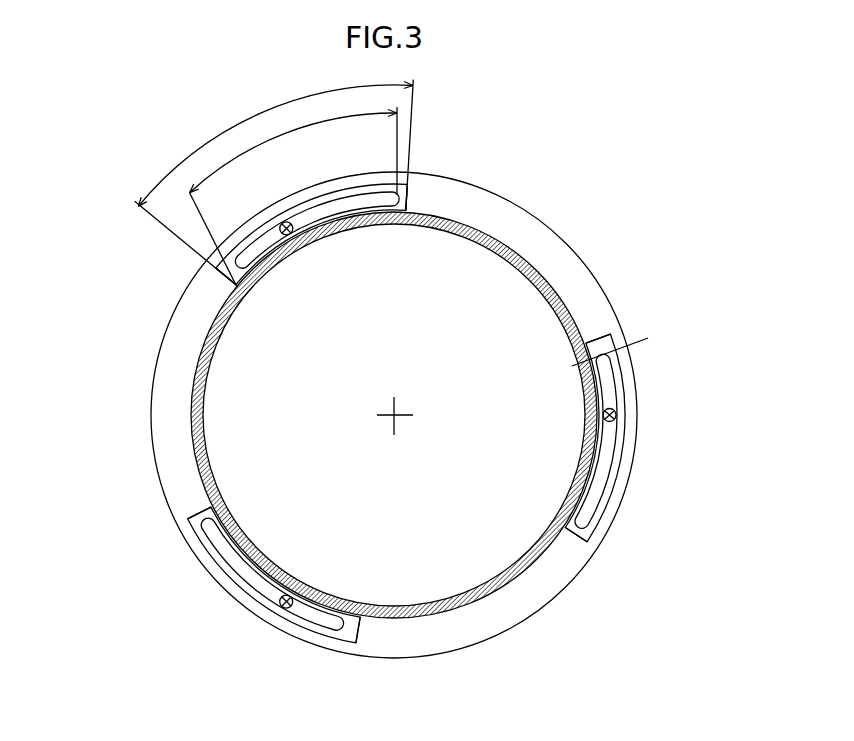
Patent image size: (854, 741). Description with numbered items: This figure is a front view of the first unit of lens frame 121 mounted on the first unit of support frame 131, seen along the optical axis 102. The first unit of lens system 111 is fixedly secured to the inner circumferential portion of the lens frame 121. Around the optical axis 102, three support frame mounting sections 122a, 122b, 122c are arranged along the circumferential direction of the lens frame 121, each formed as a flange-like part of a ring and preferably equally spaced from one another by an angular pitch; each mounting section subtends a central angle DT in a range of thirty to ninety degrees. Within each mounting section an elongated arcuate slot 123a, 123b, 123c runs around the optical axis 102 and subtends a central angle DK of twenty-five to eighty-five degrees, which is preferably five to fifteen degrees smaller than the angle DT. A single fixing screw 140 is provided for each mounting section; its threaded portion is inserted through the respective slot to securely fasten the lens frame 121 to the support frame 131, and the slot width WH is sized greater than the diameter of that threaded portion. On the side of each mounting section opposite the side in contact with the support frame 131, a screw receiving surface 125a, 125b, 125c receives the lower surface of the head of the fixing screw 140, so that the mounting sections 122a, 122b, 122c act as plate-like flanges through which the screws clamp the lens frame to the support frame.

The optical axis 102 is at (394, 415).
The first unit of lens system 111 is at (262, 356).
The first unit of lens frame 121 is at (550, 282).
The support frame mounting section 122a is at (408, 190).
The support frame mounting section 122b is at (626, 381).
The support frame mounting section 122c is at (331, 641).
The elongated arcuate slot 123a is at (376, 193).
The elongated arcuate slot 123b is at (608, 489).
The elongated arcuate slot 123c is at (207, 524).
The screw receiving surface 125a is at (277, 223).
The screw receiving surface 125b is at (592, 519).
The screw receiving surface 125c is at (248, 591).
The first unit of support frame 131 is at (528, 607).
The fixing screw 140 is at (256, 227).
The central angle subtended by each support frame mounting section DT is at (274, 183).
The central angle subtended by each elongated arcuate slot DK is at (293, 197).
The width of elongated arcuate slot WH is at (628, 339).